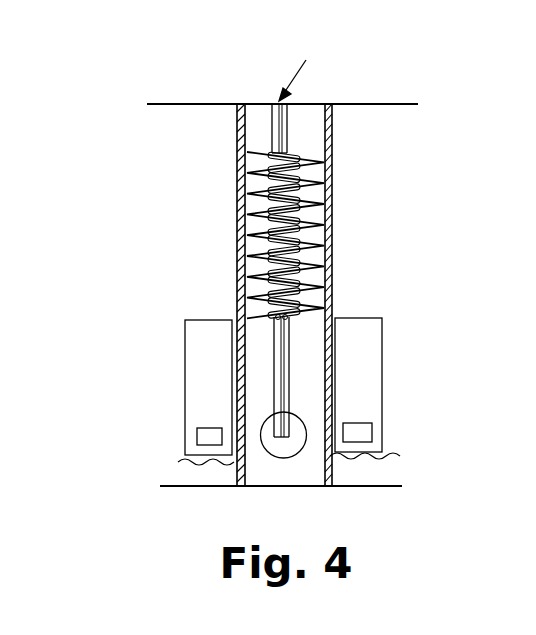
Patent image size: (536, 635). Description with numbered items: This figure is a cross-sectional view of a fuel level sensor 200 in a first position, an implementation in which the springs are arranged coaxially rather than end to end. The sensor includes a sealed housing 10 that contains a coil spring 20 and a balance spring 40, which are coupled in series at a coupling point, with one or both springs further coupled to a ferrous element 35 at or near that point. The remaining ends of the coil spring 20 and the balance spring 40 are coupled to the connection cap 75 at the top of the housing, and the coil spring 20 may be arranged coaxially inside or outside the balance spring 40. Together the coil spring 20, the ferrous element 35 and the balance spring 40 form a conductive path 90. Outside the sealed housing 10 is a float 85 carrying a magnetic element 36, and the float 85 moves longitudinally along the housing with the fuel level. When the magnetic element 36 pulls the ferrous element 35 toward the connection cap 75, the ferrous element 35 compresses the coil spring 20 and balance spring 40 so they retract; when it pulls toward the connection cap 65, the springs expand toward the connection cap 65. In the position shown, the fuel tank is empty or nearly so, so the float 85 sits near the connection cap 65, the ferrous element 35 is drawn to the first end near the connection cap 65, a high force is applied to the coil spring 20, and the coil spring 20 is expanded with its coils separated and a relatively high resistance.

The fuel level sensor 200 is at (84, 36).
The connection cap 75 is at (183, 104).
The conductive path 90 is at (301, 70).
The sealed housing 10 is at (237, 171).
The coil spring 20 is at (305, 204).
The balance spring 40 is at (315, 262).
The ferrous element 35 is at (300, 455).
The connection cap 65 is at (170, 486).
The float 85 is at (382, 370).
The magnetic element 36 is at (372, 432).